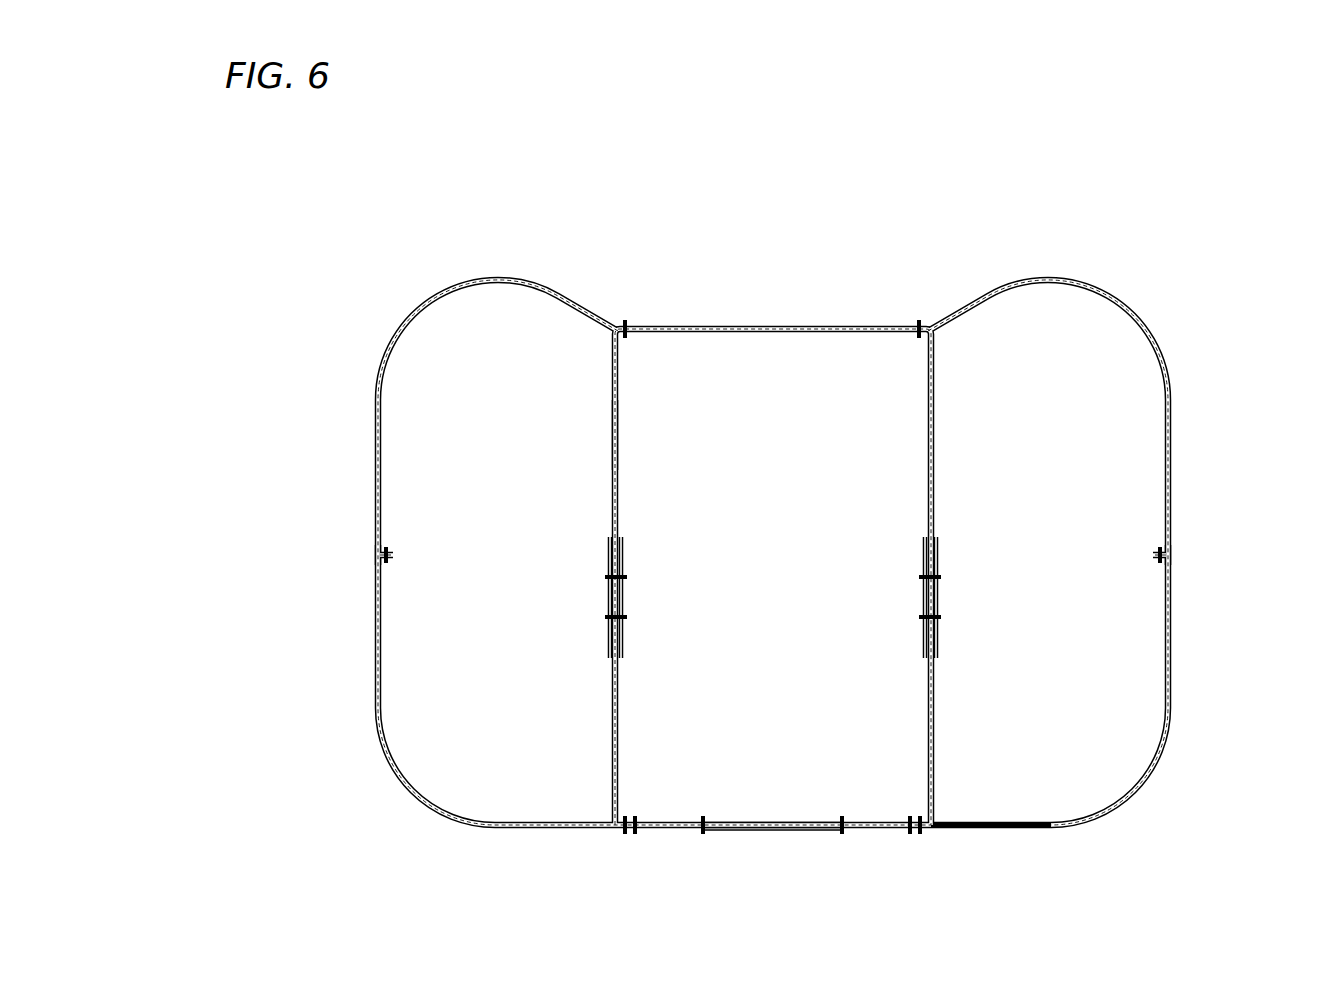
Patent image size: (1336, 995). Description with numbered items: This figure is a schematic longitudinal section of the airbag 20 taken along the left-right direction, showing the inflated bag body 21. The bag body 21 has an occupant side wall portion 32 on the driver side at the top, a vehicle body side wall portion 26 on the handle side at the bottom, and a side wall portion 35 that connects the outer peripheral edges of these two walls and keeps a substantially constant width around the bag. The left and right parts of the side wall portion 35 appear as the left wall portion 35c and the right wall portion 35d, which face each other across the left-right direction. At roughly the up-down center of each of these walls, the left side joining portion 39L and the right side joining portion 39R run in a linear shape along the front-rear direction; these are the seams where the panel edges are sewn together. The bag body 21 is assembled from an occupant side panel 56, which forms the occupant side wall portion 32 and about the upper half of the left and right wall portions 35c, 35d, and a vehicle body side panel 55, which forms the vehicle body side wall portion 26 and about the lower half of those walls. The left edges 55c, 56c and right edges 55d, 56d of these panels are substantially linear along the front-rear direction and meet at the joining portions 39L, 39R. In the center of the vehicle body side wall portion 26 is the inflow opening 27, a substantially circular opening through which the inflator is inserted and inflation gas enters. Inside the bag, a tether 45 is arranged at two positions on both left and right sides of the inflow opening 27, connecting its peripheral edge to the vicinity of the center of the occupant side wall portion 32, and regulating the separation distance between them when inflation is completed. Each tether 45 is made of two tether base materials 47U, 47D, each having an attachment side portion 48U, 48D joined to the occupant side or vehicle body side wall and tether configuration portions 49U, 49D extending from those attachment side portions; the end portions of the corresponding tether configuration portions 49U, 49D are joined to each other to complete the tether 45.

The airbag 20 is at (1221, 268).
The bag body 21 is at (1175, 393).
The vehicle body side wall portion 26 is at (560, 830).
The inflow opening 27 is at (775, 832).
The occupant side wall portion 32 is at (497, 280).
The side wall portion 35 is at (370, 710).
The left wall portion 35c is at (375, 628).
The right wall portion 35d is at (1172, 656).
The left side joining portion 39L is at (389, 568).
The right side joining portion 39R is at (1160, 568).
The tether 45 is at (962, 450).
The tether base material 47U is at (605, 432).
The tether base material 47D is at (607, 706).
The attachment side portion 48U is at (771, 334).
The attachment side portion 48D is at (676, 820).
The tether configuration portion 49U is at (610, 383).
The tether configuration portion 49D is at (612, 762).
The vehicle body side panel 55 is at (1038, 830).
The left edge 55c is at (393, 566).
The right edge 55d is at (1155, 566).
The occupant side panel 56 is at (1110, 287).
The left edge 56c is at (390, 550).
The right edge 56d is at (1157, 550).